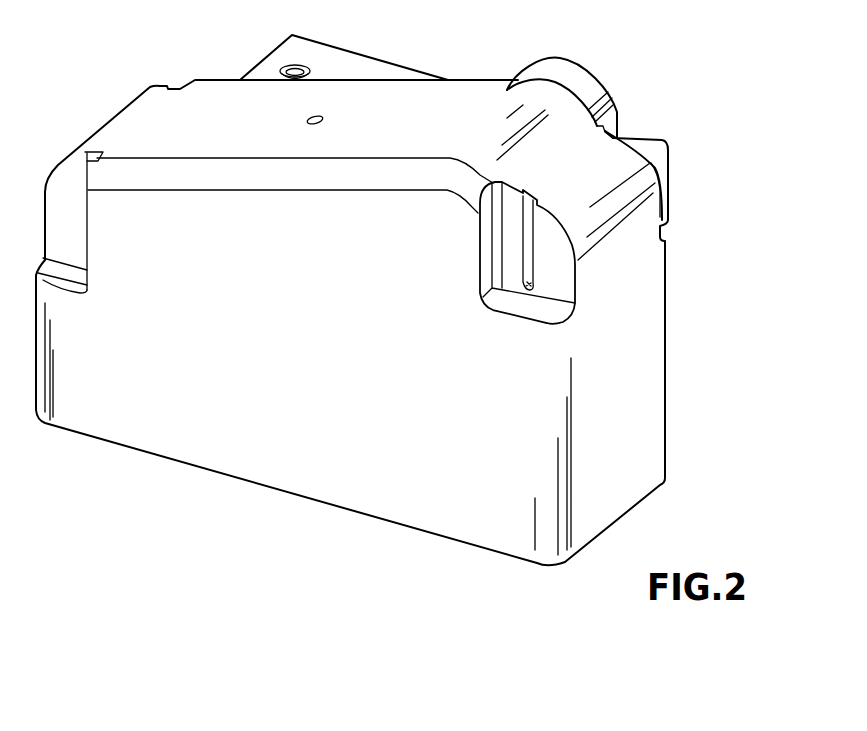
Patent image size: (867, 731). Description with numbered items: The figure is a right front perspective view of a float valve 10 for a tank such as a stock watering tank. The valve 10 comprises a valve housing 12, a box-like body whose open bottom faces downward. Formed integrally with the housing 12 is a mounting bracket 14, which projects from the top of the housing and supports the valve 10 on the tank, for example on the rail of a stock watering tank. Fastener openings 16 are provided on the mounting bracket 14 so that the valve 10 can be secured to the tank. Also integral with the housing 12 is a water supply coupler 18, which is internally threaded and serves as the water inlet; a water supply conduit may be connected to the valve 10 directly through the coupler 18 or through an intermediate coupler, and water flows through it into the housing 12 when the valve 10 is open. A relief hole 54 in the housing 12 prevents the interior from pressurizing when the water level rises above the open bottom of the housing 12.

The float valve 10 is at (400, 283).
The valve housing 12 is at (669, 352).
The mounting bracket 14 is at (258, 62).
The fastener openings 16 is at (306, 64).
The water supply coupler 18 is at (582, 62).
The relief hole 54 is at (306, 121).